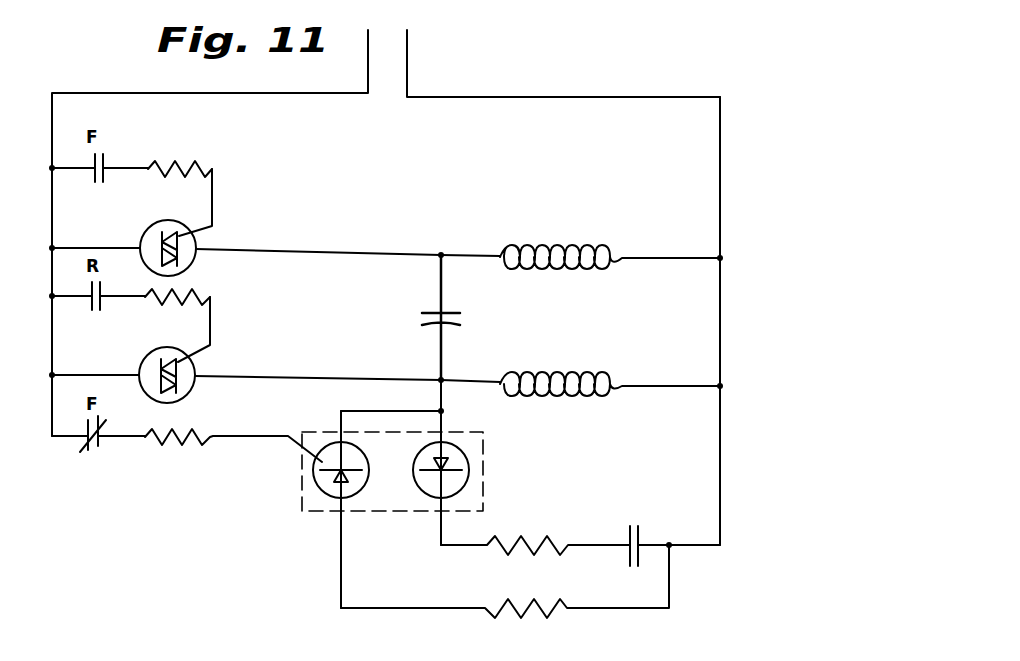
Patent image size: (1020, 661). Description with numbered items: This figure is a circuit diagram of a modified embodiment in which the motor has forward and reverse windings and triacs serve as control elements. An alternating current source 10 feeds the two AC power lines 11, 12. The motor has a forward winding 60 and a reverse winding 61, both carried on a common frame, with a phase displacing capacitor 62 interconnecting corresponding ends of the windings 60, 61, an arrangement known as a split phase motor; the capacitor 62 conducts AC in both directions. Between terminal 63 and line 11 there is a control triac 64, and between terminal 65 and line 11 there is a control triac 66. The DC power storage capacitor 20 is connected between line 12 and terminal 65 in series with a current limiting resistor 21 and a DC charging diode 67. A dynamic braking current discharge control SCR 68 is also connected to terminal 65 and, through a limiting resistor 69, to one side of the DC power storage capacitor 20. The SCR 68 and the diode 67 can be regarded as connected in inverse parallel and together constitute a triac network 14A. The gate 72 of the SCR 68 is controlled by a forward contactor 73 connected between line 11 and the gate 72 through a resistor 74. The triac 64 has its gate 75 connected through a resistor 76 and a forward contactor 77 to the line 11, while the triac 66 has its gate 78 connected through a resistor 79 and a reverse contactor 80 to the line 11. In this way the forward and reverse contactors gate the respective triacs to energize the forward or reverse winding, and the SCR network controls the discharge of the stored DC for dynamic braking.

The alternating current source 10 is at (384, 54).
The AC power line 11 is at (52, 128).
The AC power line 12 is at (720, 184).
The triac network 14A is at (310, 514).
The DC power storage capacitor 20 is at (636, 522).
The current limiting resistor 21 is at (548, 538).
The forward winding 60 is at (570, 246).
The reverse winding 61 is at (578, 374).
The phase displacing capacitor 62 is at (458, 315).
The terminal 63 is at (442, 252).
The control triac 64 is at (196, 258).
The terminal 65 is at (446, 377).
The control triac 66 is at (197, 370).
The DC charging diode 67 is at (470, 462).
The dynamic braking current discharge control SCR 68 is at (313, 486).
The limiting resistor 69 is at (524, 614).
The gate 72 is at (308, 438).
The forward contactor 73 is at (96, 452).
The resistor 74 is at (182, 452).
The gate 75 is at (212, 230).
The resistor 76 is at (182, 162).
The forward contactor 77 is at (106, 163).
The gate 78 is at (212, 350).
The resistor 79 is at (180, 312).
The reverse contactor 80 is at (90, 304).